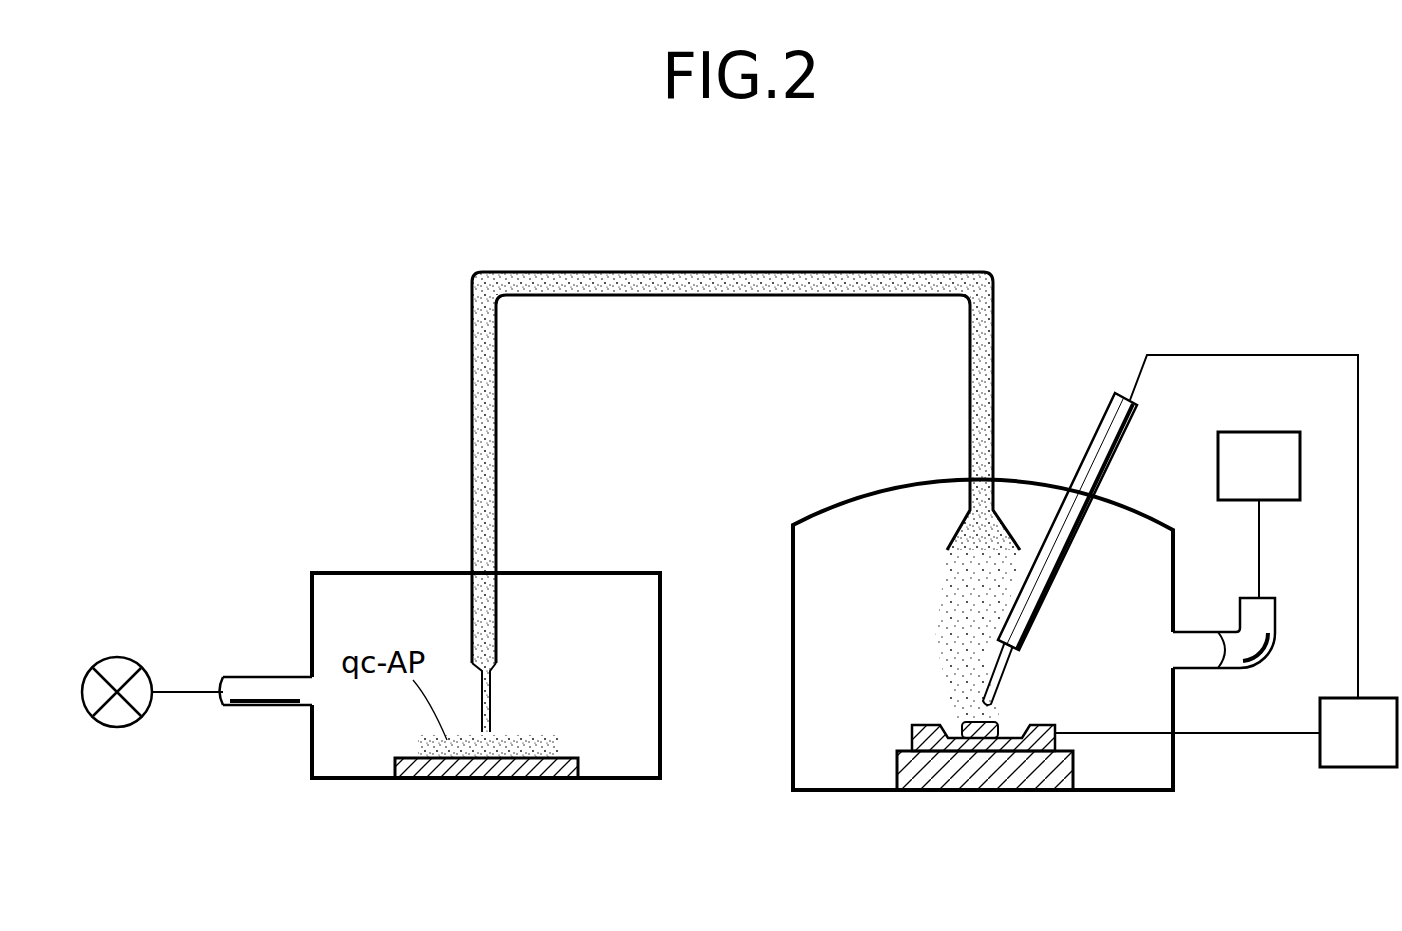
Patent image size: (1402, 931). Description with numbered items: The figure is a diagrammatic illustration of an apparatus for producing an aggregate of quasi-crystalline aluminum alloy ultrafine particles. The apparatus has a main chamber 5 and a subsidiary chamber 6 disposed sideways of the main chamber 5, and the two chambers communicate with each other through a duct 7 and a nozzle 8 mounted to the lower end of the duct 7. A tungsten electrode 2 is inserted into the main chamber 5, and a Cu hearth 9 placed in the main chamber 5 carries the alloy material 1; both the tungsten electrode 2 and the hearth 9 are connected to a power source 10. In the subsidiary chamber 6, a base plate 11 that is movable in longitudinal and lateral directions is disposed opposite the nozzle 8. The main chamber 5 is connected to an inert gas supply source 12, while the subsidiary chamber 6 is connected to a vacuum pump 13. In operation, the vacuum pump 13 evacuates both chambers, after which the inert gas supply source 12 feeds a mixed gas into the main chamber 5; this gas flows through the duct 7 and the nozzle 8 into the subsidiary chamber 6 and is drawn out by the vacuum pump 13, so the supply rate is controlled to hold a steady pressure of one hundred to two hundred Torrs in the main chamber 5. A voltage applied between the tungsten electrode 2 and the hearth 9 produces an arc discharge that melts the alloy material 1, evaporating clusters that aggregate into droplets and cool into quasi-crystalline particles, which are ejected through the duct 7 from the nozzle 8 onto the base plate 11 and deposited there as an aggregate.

The alloy material 1 is at (965, 722).
The tungsten electrode 2 is at (1088, 445).
The main chamber 5 is at (840, 500).
The subsidiary chamber 6 is at (598, 573).
The duct 7 is at (738, 272).
The nozzle 8 is at (493, 695).
The Cu hearth 9 is at (985, 778).
The power source 10 is at (1372, 755).
The base plate 11 is at (530, 772).
The inert gas supply source 12 is at (1270, 486).
The vacuum pump 13 is at (118, 656).